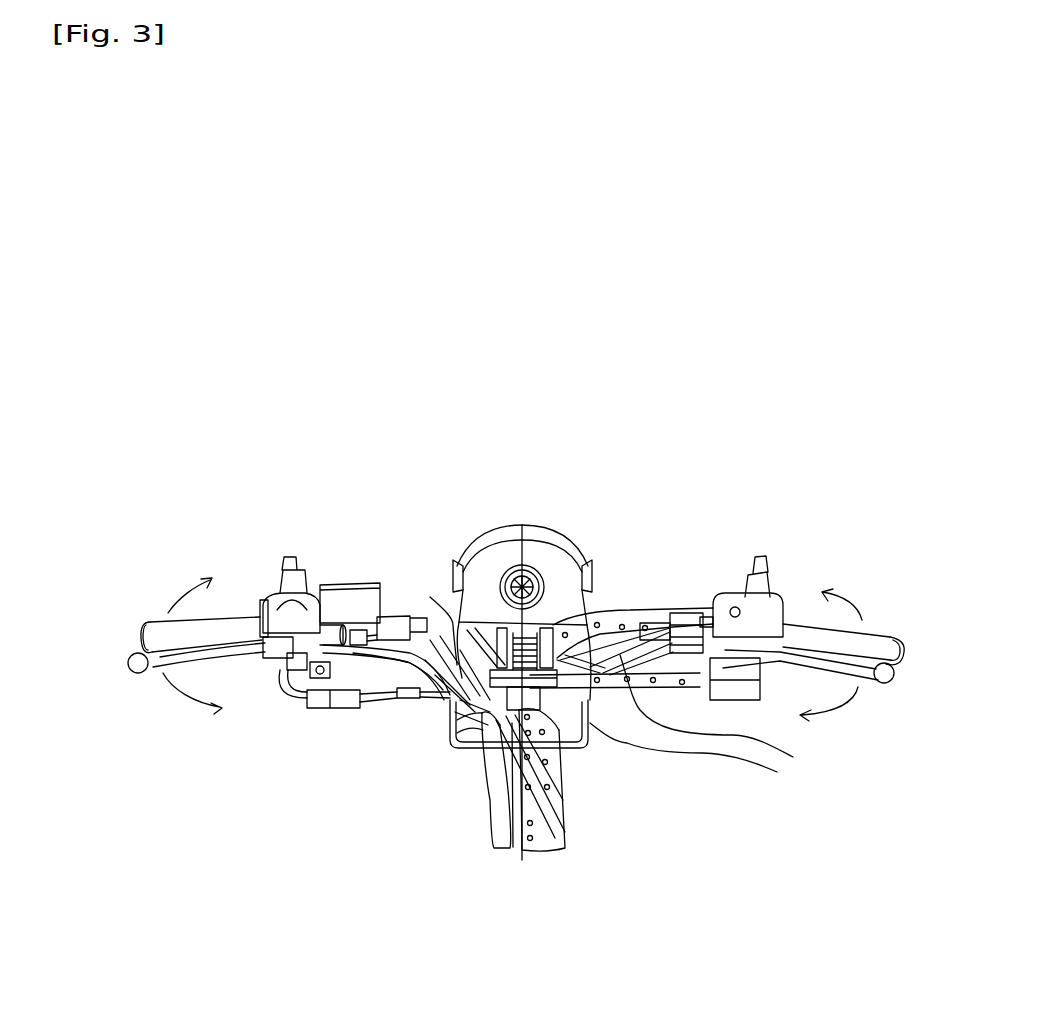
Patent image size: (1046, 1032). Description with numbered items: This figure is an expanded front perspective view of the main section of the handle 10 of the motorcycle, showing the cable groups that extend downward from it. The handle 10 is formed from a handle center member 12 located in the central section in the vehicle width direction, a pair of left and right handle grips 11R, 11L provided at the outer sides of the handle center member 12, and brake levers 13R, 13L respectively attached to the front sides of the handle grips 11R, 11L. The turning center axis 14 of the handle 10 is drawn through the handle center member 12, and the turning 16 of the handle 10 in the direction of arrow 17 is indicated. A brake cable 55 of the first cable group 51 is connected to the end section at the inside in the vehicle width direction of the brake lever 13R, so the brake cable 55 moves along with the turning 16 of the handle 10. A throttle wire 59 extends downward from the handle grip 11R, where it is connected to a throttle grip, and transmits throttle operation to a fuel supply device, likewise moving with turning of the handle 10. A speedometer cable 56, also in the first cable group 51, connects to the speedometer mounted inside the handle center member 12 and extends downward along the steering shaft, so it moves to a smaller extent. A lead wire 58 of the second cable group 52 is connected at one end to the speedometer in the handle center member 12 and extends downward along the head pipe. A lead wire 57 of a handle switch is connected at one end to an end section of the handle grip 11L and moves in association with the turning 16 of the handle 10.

The handle 10 is at (609, 364).
The right handle grip 11R is at (230, 628).
The left handle grip 11L is at (813, 633).
The handle center member 12 is at (545, 558).
The right brake lever 13R is at (153, 668).
The left brake lever 13L is at (860, 670).
The turning center axis 14 is at (522, 517).
The turning of handle 16 is at (186, 598).
The arrow 17 is at (446, 600).
The first cable group 51 is at (745, 802).
The second cable group 52 is at (766, 778).
The brake cable 55 is at (565, 797).
The speedometer cable 56 is at (565, 825).
The lead wire of handle switch 57 is at (793, 757).
The lead wire 58 is at (777, 772).
The throttle wire 59 is at (427, 697).